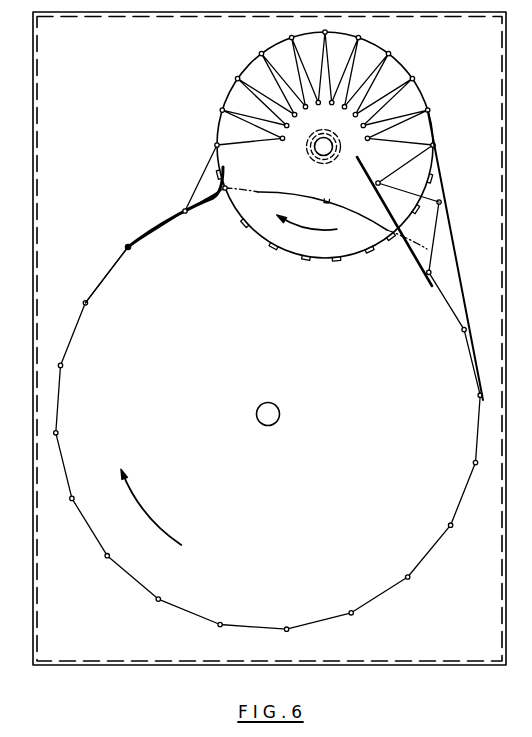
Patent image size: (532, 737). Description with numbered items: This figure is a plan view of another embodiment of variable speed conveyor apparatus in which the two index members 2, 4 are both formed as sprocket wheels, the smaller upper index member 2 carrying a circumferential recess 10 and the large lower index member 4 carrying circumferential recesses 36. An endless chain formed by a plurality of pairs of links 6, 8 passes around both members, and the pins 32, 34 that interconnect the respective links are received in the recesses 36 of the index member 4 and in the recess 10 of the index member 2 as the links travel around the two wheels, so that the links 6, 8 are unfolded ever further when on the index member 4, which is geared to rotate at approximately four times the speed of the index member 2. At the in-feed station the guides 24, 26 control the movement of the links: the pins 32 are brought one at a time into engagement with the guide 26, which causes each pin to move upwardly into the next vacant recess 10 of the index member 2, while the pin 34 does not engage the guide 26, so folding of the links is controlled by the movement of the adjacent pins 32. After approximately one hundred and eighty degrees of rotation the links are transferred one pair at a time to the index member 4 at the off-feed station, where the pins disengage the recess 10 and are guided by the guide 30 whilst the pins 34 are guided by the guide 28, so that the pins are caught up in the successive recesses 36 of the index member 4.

The index member 2 is at (350, 173).
The index member 4 is at (350, 350).
The link 6 is at (156, 230).
The link 8 is at (102, 281).
The recess 10 is at (339, 261).
The guide 24 is at (153, 224).
The guide 26 is at (214, 203).
The guide 28 is at (406, 248).
The guide 30 is at (488, 270).
The pin 32 is at (216, 150).
The pin 34 is at (281, 147).
The recess 36 is at (186, 214).